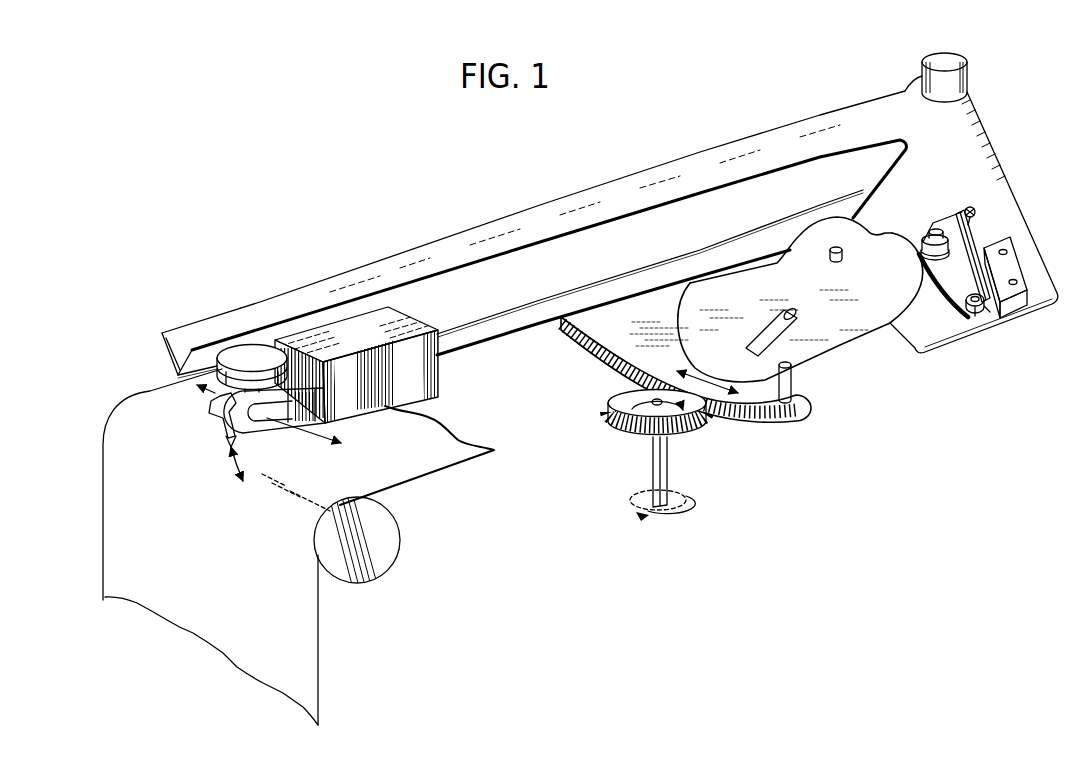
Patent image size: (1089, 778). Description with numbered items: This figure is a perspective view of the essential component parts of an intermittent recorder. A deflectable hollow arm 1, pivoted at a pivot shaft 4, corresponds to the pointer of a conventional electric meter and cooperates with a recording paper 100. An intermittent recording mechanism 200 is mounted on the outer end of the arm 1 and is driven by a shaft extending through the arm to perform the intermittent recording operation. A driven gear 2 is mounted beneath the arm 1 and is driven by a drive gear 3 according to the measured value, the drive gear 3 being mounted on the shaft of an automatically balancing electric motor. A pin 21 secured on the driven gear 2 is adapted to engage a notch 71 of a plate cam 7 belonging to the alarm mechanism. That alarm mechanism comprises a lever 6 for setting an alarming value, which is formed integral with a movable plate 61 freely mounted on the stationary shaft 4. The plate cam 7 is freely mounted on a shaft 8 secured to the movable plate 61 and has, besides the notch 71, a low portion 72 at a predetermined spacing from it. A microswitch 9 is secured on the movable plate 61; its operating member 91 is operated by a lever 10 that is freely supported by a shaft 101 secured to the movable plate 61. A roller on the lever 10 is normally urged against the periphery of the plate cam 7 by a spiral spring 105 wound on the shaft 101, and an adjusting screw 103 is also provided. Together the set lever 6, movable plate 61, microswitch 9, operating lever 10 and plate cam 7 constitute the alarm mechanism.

The arm 1 is at (503, 346).
The driven gear 2 is at (612, 341).
The drive gear 3 is at (613, 433).
The pivot shaft 4 is at (962, 56).
The lever 6 is at (473, 234).
The plate cam 7 is at (865, 330).
The shaft 8 is at (842, 251).
The microswitch 9 is at (1023, 268).
The lever 10 is at (935, 229).
The pin 21 is at (796, 372).
The movable plate 61 is at (995, 128).
The notch 71 is at (768, 358).
The low portion 72 is at (877, 231).
The operating member 91 is at (976, 269).
The recording paper 100 is at (397, 475).
The shaft 101 is at (984, 312).
The adjusting screw 103 is at (985, 203).
The spiral spring 105 is at (980, 307).
The intermittent recording mechanism 200 is at (352, 407).